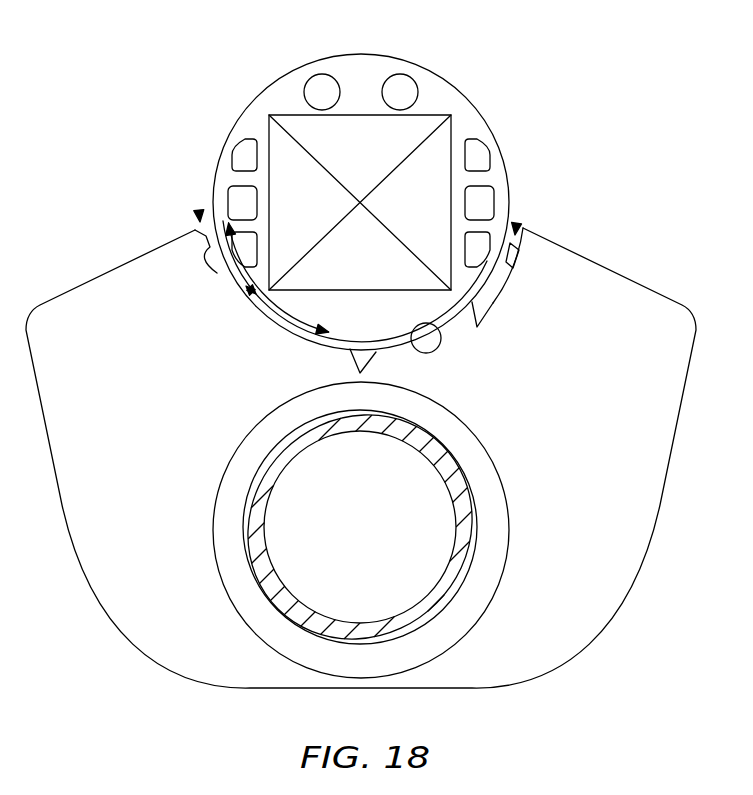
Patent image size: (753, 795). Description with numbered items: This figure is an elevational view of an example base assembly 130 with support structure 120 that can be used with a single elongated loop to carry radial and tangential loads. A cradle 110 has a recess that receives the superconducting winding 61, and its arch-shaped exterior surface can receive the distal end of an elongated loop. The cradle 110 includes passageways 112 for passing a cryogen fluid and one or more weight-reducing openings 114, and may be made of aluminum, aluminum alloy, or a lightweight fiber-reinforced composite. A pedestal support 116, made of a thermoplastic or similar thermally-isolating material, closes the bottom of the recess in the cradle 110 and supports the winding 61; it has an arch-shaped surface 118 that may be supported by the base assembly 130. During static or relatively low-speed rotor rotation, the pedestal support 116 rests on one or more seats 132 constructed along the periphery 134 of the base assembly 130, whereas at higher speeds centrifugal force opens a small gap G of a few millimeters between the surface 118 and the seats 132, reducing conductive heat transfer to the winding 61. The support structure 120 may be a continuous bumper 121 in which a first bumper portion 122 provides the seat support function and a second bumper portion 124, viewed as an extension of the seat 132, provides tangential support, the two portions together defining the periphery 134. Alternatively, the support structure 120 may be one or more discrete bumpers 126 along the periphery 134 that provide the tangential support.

The superconducting winding 61 is at (348, 153).
The cradle 110 is at (457, 91).
The passageways 112 is at (333, 77).
The weight-reducing openings 114 is at (483, 162).
The pedestal support 116 is at (403, 307).
The arch-shaped surface 118 is at (350, 358).
The support structure 120 is at (515, 235).
The continuous bumper 121 is at (195, 231).
The first bumper portion 122 is at (299, 325).
The second bumper portion 124 is at (232, 258).
The discrete bumpers 126 is at (512, 256).
The base assembly 130 is at (668, 285).
The seats 132 is at (418, 350).
The periphery 134 is at (521, 232).
The gap G is at (248, 303).